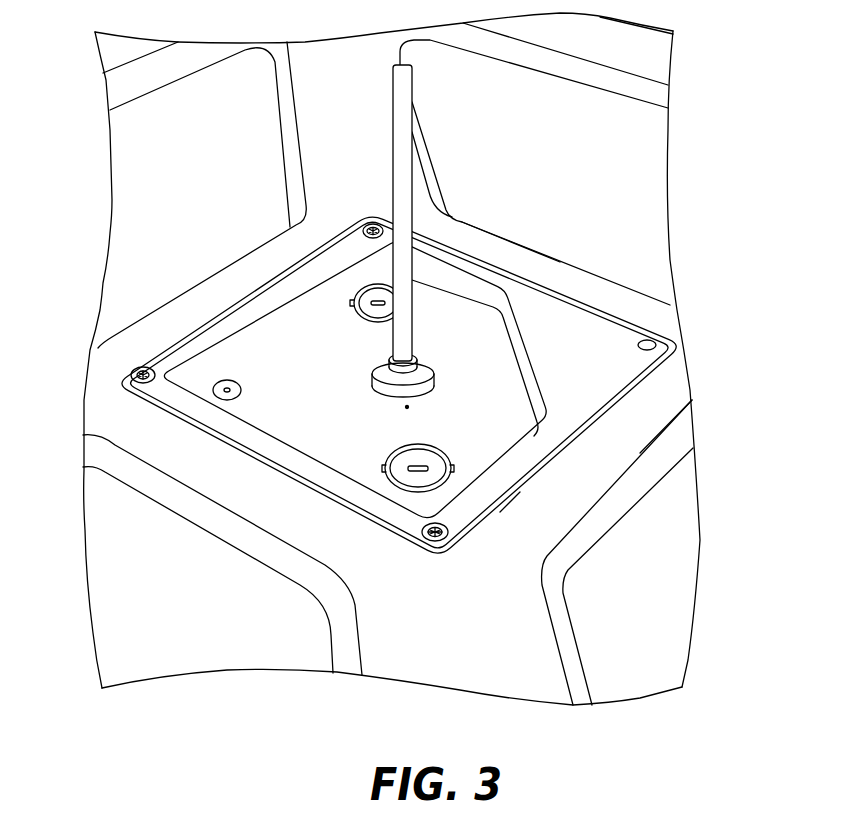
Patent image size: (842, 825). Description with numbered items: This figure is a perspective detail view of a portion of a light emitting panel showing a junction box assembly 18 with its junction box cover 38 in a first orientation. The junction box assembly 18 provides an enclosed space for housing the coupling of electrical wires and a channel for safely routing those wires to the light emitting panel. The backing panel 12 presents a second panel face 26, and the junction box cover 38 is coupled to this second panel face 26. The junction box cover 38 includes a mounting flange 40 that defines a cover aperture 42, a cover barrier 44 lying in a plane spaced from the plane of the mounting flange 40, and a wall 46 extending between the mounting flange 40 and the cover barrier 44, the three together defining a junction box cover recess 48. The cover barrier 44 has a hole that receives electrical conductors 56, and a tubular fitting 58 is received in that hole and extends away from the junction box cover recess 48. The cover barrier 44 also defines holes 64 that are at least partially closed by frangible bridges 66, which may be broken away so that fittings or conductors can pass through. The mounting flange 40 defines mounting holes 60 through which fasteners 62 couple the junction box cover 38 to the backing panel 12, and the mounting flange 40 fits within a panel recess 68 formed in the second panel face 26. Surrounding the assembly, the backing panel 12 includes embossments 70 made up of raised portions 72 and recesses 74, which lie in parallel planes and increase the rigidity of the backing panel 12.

The backing panel 12 is at (723, 445).
The junction box assembly 18 is at (494, 246).
The second panel face 26 is at (672, 398).
The junction box cover 38 is at (535, 310).
The mounting flange 40 is at (527, 473).
The cover aperture 42 is at (497, 378).
The cover barrier 44 is at (313, 425).
The wall 46 is at (253, 332).
The junction box cover recess 48 is at (333, 293).
The electrical conductors 56 is at (403, 82).
The tubular fitting 58 is at (428, 388).
The mounting holes 60 is at (367, 222).
The fasteners 62 is at (372, 223).
The hole 64 is at (372, 324).
The frangible bridge 66 is at (360, 312).
The panel recess 68 is at (497, 518).
The embossments 70 is at (118, 96).
The raised portions 72 is at (335, 90).
The recesses 74 is at (177, 180).